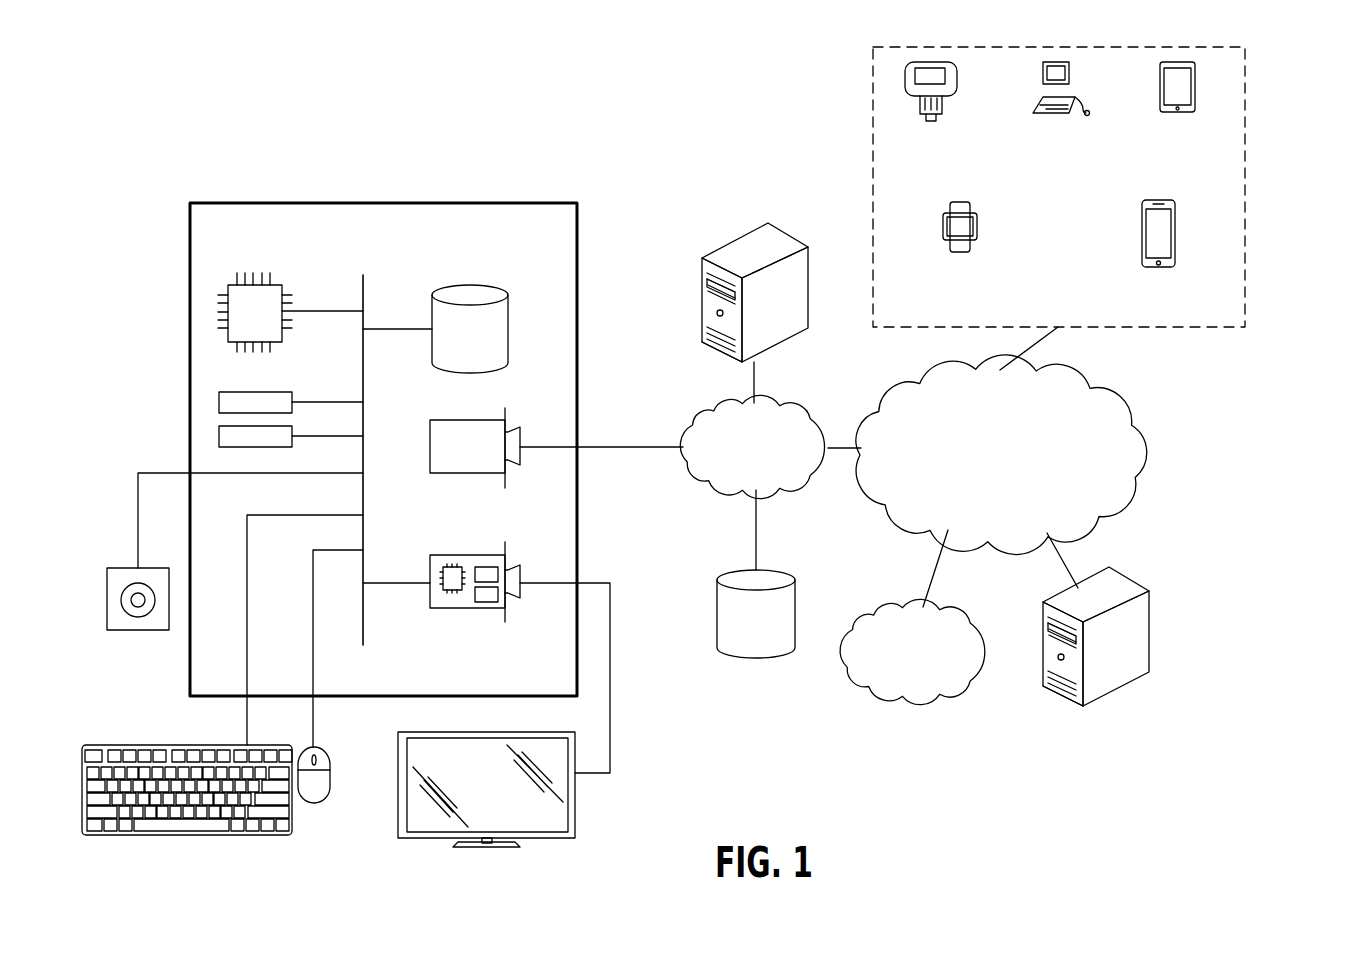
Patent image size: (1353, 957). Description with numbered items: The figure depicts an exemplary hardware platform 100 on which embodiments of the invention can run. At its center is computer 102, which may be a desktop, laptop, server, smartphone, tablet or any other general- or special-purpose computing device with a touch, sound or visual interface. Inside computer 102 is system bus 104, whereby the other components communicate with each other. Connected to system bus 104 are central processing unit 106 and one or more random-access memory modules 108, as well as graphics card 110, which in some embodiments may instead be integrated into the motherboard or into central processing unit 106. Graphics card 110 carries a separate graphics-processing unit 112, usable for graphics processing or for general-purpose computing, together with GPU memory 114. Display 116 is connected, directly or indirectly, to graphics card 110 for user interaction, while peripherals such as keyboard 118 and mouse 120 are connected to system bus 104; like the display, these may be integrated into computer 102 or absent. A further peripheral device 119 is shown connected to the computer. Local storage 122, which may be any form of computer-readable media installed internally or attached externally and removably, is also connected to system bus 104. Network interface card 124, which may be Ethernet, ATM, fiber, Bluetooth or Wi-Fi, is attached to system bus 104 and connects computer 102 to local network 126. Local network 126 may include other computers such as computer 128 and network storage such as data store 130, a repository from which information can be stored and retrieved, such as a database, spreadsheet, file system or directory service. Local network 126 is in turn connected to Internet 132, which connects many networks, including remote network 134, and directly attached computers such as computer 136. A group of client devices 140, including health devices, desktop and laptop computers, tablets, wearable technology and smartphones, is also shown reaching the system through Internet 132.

The hardware platform 100 is at (216, 108).
The computer 102 is at (558, 202).
The system bus 104 is at (366, 283).
The central processing unit 106 is at (278, 283).
The random-access memory modules 108 is at (265, 391).
The graphics card 110 is at (430, 565).
The graphics-processing unit 112 is at (453, 588).
The GPU memory 114 is at (485, 597).
The display 116 is at (576, 818).
The keyboard 118 is at (148, 743).
The camera 119 is at (140, 632).
The mouse 120 is at (313, 803).
The local storage 122 is at (508, 297).
The network interface card 124 is at (430, 428).
The local network 126 is at (792, 408).
The computer 128 is at (790, 232).
The data store 130 is at (752, 655).
The Internet 132 is at (1070, 375).
The remote network 134 is at (963, 620).
The computer 136 is at (1127, 580).
The client devices 140 is at (1247, 175).